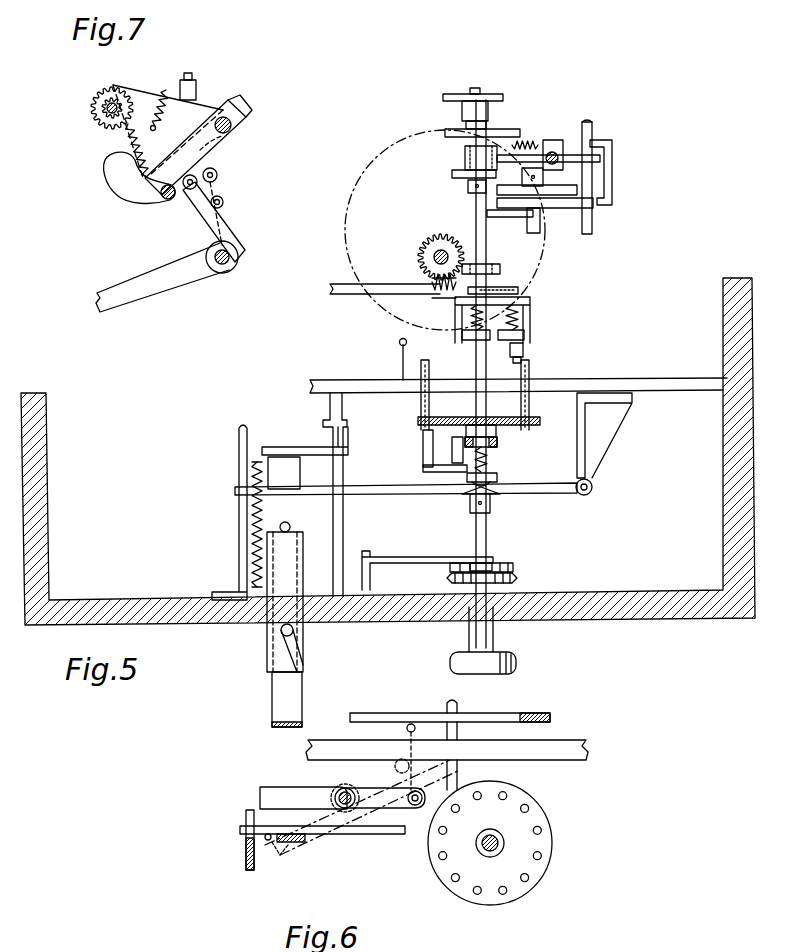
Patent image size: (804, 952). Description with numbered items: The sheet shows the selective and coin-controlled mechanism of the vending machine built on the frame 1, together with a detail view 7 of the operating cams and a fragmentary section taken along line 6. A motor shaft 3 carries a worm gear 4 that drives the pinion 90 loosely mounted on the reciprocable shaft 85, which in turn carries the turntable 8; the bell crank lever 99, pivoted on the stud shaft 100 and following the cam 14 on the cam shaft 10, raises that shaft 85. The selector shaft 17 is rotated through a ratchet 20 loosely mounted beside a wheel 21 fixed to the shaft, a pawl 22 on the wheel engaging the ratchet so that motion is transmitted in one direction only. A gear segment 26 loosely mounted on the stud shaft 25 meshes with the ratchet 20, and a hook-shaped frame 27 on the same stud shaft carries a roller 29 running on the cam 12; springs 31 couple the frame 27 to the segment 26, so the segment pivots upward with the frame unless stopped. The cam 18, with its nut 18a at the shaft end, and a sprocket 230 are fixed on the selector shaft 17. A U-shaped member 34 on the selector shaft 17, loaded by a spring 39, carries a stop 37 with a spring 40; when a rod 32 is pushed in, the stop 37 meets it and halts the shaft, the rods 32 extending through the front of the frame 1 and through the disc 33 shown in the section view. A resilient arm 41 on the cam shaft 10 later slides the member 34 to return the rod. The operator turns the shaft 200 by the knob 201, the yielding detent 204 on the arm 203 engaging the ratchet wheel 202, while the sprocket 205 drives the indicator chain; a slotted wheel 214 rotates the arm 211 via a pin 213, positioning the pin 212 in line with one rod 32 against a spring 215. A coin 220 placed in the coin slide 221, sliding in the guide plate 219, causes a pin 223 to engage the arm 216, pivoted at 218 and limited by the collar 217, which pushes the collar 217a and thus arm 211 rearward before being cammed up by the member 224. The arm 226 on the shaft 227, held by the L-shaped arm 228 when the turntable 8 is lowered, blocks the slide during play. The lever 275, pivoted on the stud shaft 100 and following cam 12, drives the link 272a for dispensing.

In FIG. 5, the frame 1 is at (660, 380).
In FIG. 6, the frame 1 is at (586, 749).
In FIG. 5, the motor shaft 3 is at (360, 284).
In FIG. 5, the worm gear 4 is at (432, 294).
In FIG. 5, the section line 6— 6 is at (211, 482).
In FIG. 5, the detail view 7 is at (664, 200).
In FIG. 5, the turntable 8 is at (318, 698).
In FIG. 6, the turntable 8 is at (550, 716).
In FIG. 7, the cam shaft 10 is at (218, 185).
In FIG. 5, the cam shaft 10 is at (540, 226).
In FIG. 7, the cam 12 is at (205, 165).
In FIG. 5, the cam 12 is at (573, 185).
In FIG. 7, the cam 14 is at (105, 168).
In FIG. 5, the cam 14 is at (465, 222).
In FIG. 7, the selector shaft 17 is at (126, 95).
In FIG. 5, the selector shaft 17 is at (486, 370).
In FIG. 5, the cam 18 is at (452, 129).
In FIG. 5, the nut 18a is at (447, 94).
In FIG. 7, the ratchet 20 is at (94, 116).
In FIG. 5, the ratchet 20 is at (465, 152).
In FIG. 7, the wheel 21 is at (100, 106).
In FIG. 5, the wheel 21 is at (470, 178).
In FIG. 7, the pawl 22 is at (91, 88).
In FIG. 5, the pawl 22 is at (452, 173).
In FIG. 7, the stud shaft 25 is at (223, 117).
In FIG. 5, the stud shaft 25 is at (592, 128).
In FIG. 7, the gear segment 26 is at (133, 135).
In FIG. 5, the gear segment 26 is at (500, 155).
In FIG. 7, the hook-shaped frame 27 is at (246, 112).
In FIG. 5, the hook-shaped frame 27 is at (612, 150).
In FIG. 7, the roller 29 is at (167, 190).
In FIG. 5, the roller 29 is at (468, 188).
In FIG. 7, the springs 31 is at (168, 88).
In FIG. 5, the springs 31 is at (530, 140).
In FIG. 5, the rods 32 is at (529, 368).
In FIG. 6, the rods 32 is at (540, 860).
In FIG. 5, the disc 33 is at (540, 418).
In FIG. 6, the disc 33 is at (520, 810).
In FIG. 5, the U-shaped member 34 is at (455, 316).
In FIG. 5, the stop 37 is at (523, 350).
In FIG. 5, the spring 39 is at (470, 333).
In FIG. 5, the spring 40 is at (518, 324).
In FIG. 5, the resilient arm 41 is at (518, 290).
In FIG. 5, the reciprocable shaft 85 is at (434, 255).
In FIG. 5, the pinion 90 is at (420, 266).
In FIG. 7, the bell crank lever 99 is at (143, 283).
In FIG. 7, the stud shaft 100 is at (238, 252).
In FIG. 5, the shaft 200 is at (476, 538).
In FIG. 6, the shaft 200 is at (495, 855).
In FIG. 5, the knob 201 is at (516, 664).
In FIG. 5, the ratchet wheel 202 is at (513, 566).
In FIG. 5, the arm 203 is at (398, 562).
In FIG. 5, the yielding detent 204 is at (495, 562).
In FIG. 5, the sprocket 205 is at (517, 579).
In FIG. 5, the arm 211 is at (445, 466).
In FIG. 5, the pin 212 is at (423, 446).
In FIG. 5, the pin 213 is at (457, 465).
In FIG. 5, the slotted wheel 214 is at (468, 437).
In FIG. 5, the spring 215 is at (487, 455).
In FIG. 5, the arm 216 is at (375, 497).
In FIG. 6, the arm 216 is at (362, 834).
In FIG. 5, the collar 217 is at (490, 496).
In FIG. 5, the collar 217a is at (497, 478).
In FIG. 5, the pivot 218 is at (592, 488).
In FIG. 5, the guide plate 219 is at (303, 645).
In FIG. 5, the coin 220 is at (281, 632).
In FIG. 5, the coin slide 221 is at (290, 482).
In FIG. 6, the coin slide 221 is at (290, 850).
In FIG. 5, the pin 223 is at (290, 525).
In FIG. 5, the member 224 is at (239, 440).
In FIG. 6, the member 224 is at (246, 820).
In FIG. 5, the arm 226 is at (306, 435).
In FIG. 6, the arm 226 is at (284, 770).
In FIG. 6, the shaft 227 is at (348, 790).
In FIG. 5, the L-shaped arm 228 is at (400, 360).
In FIG. 6, the L-shaped arm 228 is at (420, 790).
In FIG. 5, the sprocket 230 is at (495, 266).
In FIG. 7, the link 272a is at (167, 233).
In FIG. 7, the lever 275 is at (222, 218).